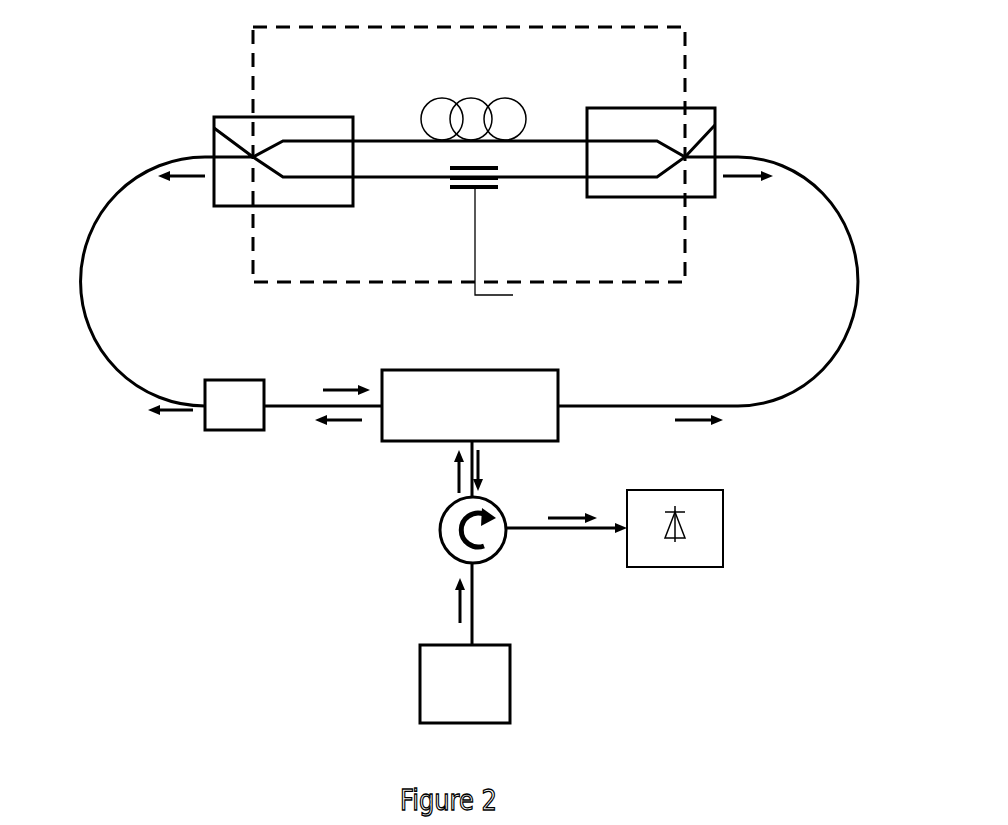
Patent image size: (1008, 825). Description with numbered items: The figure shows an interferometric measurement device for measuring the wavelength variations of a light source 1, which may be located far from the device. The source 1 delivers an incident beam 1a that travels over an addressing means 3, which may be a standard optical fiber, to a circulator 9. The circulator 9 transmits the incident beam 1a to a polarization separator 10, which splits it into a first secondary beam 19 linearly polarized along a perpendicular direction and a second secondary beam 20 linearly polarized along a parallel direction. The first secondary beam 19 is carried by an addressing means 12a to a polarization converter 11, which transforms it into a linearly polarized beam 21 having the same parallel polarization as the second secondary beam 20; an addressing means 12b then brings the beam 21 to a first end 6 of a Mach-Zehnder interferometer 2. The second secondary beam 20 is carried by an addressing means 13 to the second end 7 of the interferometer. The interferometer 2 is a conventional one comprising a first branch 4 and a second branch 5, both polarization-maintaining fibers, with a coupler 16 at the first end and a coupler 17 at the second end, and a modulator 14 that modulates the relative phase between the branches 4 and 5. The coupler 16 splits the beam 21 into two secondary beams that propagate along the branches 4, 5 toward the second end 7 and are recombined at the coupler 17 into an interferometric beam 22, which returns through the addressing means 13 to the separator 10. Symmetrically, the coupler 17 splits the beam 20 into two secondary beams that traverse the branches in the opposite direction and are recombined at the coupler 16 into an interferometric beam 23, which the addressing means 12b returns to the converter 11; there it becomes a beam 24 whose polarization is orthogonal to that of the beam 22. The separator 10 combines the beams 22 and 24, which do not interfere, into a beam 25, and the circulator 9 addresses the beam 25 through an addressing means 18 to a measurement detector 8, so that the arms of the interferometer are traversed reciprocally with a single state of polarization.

The light source 1 is at (420, 677).
The incident beam 1a is at (455, 470).
The Mach-Zehnder interferometer 2 is at (685, 53).
The addressing means 3 is at (470, 603).
The first branch 4 is at (470, 100).
The second branch 5 is at (410, 178).
The first end 6 is at (214, 128).
The second end 7 is at (717, 123).
The measurement detector 8 is at (670, 568).
The circulator 9 is at (488, 563).
The polarization separator 10 is at (558, 420).
The polarization converter 11 is at (235, 432).
The addressing means 12a is at (290, 405).
The addressing means 12b is at (82, 287).
The addressing means 13 is at (852, 320).
The modulator 14 is at (498, 188).
The coupler 16 is at (283, 116).
The coupler 17 is at (598, 198).
The addressing means 18 is at (573, 530).
The first secondary beam 19 is at (343, 423).
The second secondary beam 20 is at (697, 422).
The linearly polarized beam 21 is at (177, 413).
The interferometric beam 22 is at (752, 180).
The interferometric beam 23 is at (185, 178).
The beam 24 is at (337, 387).
The beam 25 is at (480, 483).